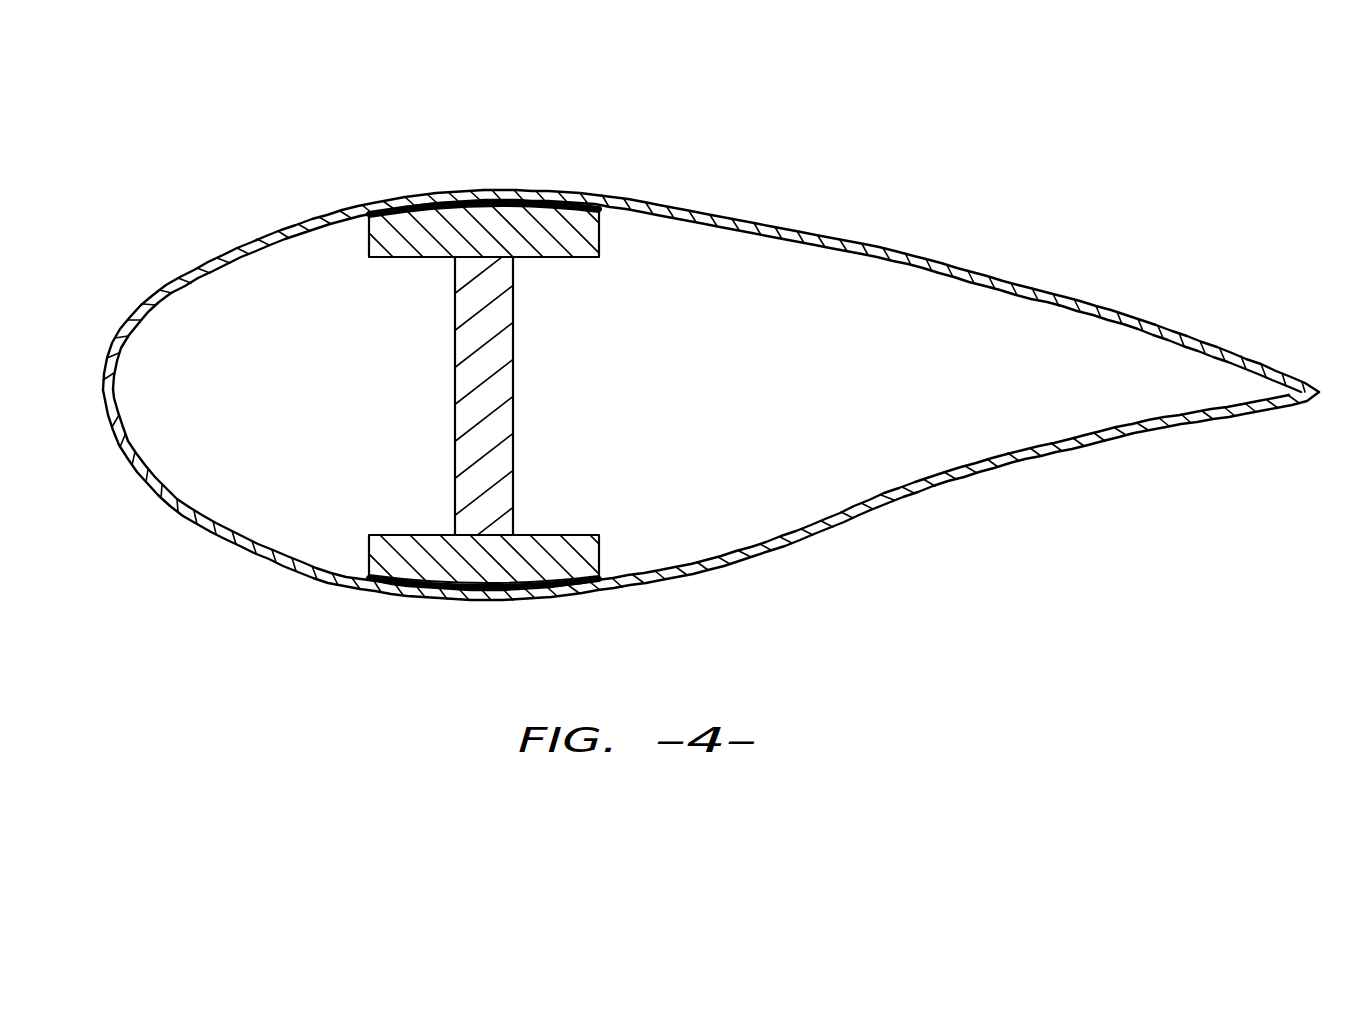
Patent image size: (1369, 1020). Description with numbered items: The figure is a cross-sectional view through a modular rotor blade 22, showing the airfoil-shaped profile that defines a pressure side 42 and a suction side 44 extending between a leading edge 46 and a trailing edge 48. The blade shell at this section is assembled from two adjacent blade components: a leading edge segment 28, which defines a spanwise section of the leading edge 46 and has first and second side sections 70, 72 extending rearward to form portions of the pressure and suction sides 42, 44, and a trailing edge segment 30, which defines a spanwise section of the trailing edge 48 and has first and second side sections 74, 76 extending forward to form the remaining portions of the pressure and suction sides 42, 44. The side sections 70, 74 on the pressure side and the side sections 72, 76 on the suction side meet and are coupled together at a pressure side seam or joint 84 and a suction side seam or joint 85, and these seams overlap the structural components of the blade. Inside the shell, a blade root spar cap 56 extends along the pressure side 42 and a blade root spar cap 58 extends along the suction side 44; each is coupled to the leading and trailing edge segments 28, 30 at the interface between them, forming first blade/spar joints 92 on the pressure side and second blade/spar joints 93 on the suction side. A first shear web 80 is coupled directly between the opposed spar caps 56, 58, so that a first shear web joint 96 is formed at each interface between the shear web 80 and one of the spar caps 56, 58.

The modular rotor blade 22 is at (178, 159).
The leading edge segment 28 is at (142, 302).
The trailing edge segment 30 is at (1005, 277).
The pressure side 42 is at (715, 213).
The suction side 44 is at (767, 553).
The leading edge 46 is at (105, 388).
The trailing edge 48 is at (1321, 392).
The blade root spar cap 56 is at (599, 235).
The blade root spar cap 58 is at (599, 550).
The first side section 70 is at (270, 237).
The second side section 72 is at (176, 503).
The first side section 74 is at (889, 288).
The second side section 76 is at (980, 466).
The first shear web 80 is at (455, 415).
The pressure side seam or joint 84 is at (481, 196).
The suction side seam or joint 85 is at (482, 598).
The first blade/spar joint 92 is at (375, 208).
The second blade/spar joint 93 is at (376, 588).
The first shear web joint 96 is at (484, 262).